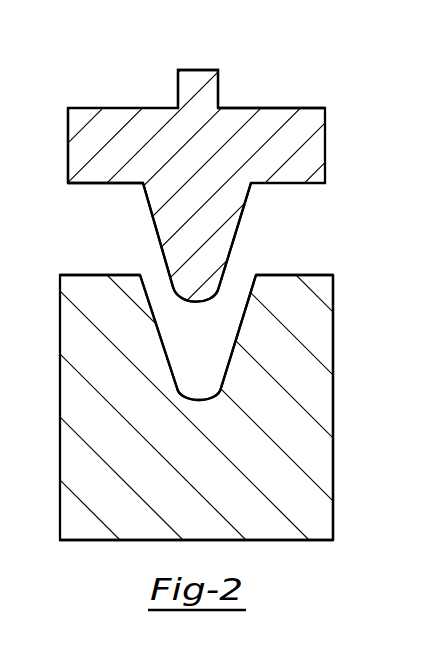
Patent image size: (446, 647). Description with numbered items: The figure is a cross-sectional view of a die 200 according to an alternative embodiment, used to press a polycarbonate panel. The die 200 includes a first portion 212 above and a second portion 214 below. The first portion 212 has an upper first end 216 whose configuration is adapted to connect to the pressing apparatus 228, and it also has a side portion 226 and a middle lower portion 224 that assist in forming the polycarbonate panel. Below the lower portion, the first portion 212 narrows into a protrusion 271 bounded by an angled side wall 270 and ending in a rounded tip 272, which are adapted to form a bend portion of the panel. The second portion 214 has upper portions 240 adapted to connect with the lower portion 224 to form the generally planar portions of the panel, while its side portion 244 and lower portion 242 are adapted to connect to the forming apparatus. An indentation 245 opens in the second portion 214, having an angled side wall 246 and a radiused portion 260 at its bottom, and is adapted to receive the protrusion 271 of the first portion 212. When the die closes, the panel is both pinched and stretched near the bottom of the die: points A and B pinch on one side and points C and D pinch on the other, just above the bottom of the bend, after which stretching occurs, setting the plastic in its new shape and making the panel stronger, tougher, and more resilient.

The die 200 is at (36, 181).
The first portion 212 is at (88, 130).
The upper first end 216 is at (204, 74).
The pressing apparatus 228 is at (293, 108).
The side portion 226 is at (68, 147).
The middle lower portion 224 is at (77, 184).
The angled side wall 270 is at (157, 231).
The protrusion 271 is at (244, 212).
The rounded tip 272 is at (197, 305).
The second portion 214 is at (323, 392).
The upper portion 240 is at (320, 275).
The side portion 244 is at (333, 322).
The lower portion 242 is at (263, 541).
The angled side wall 246 is at (147, 291).
The indentation 245 is at (230, 302).
The radiused portion 260 is at (197, 400).
The point A is at (172, 305).
The point B is at (176, 399).
The point C is at (237, 313).
The point D is at (240, 402).